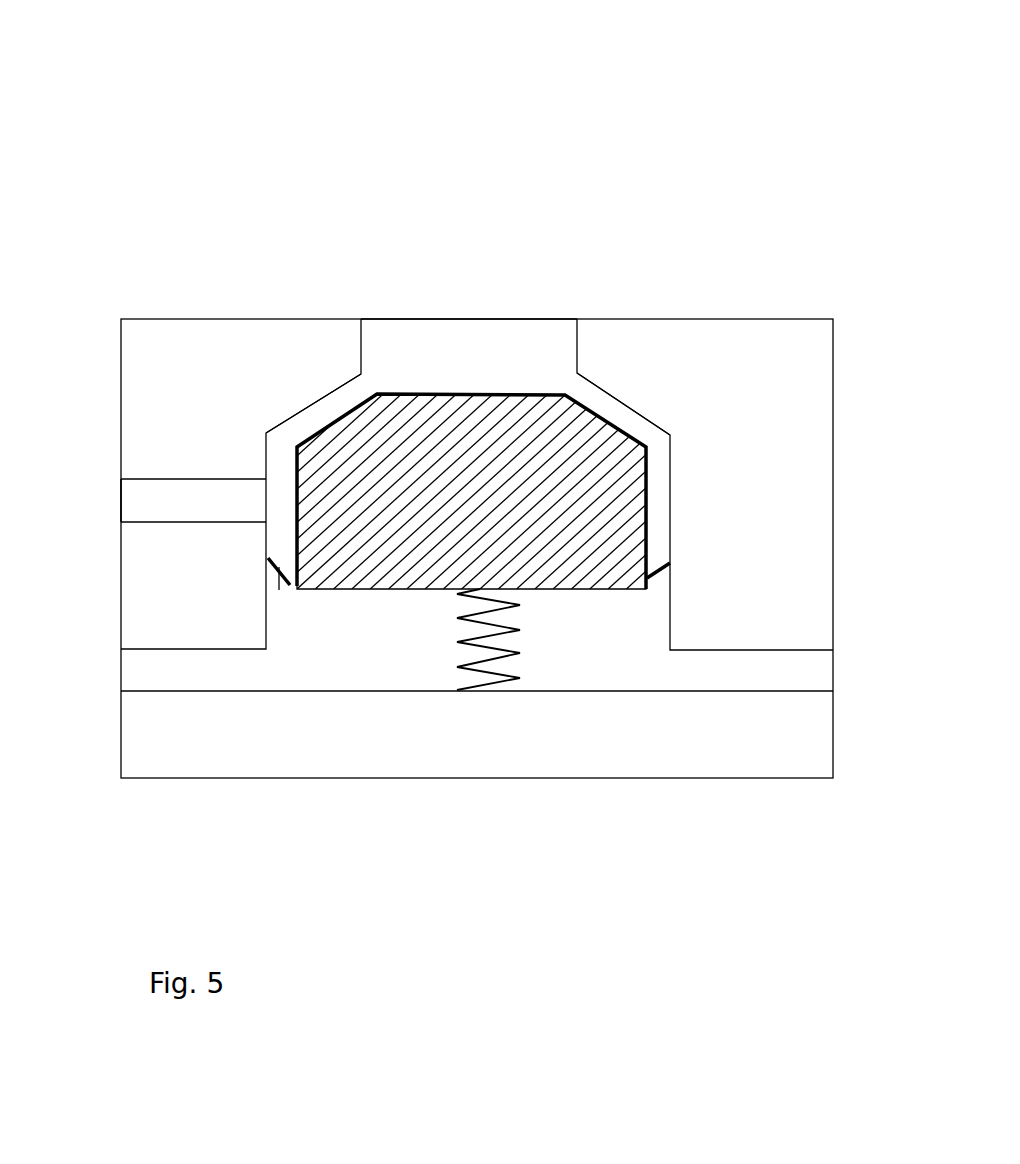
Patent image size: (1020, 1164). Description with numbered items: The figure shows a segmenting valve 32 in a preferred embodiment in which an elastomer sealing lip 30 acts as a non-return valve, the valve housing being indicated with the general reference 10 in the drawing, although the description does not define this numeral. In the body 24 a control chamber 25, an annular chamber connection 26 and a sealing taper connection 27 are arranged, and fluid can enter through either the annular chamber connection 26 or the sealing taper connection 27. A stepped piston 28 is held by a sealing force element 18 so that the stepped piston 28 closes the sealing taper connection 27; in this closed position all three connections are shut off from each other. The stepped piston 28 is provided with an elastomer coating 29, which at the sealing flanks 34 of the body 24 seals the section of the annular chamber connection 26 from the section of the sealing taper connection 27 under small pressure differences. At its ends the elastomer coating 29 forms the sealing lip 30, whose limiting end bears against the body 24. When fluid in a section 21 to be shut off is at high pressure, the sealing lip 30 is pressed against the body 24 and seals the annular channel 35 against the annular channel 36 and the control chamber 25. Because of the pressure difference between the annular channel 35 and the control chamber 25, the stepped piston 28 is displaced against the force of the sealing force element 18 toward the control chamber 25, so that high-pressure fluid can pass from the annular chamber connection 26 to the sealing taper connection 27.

The segmenting valve 32 is at (535, 74).
The housing 10 is at (380, 322).
The body 24 is at (744, 387).
The control chamber 25 is at (808, 677).
The annular chamber connection 26 is at (146, 507).
The section to be shut off 21 is at (121, 512).
The sealing taper connection 27 is at (443, 347).
The stepped piston 28 is at (351, 497).
The elastomer coating 29 is at (498, 386).
The sealing flanks 34 is at (326, 398).
The annular channel 35 is at (280, 472).
The annular channel 36 is at (278, 540).
The sealing lip 30 is at (279, 567).
The sealing force element 18 is at (485, 670).